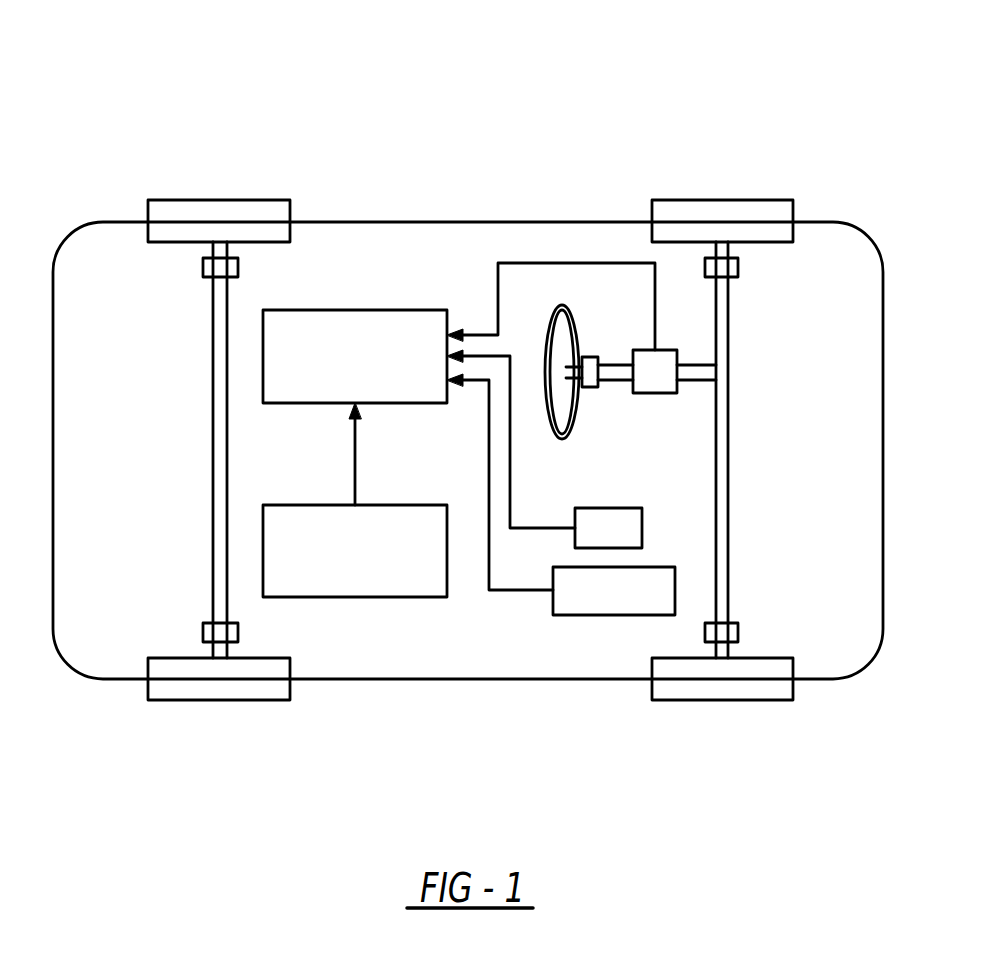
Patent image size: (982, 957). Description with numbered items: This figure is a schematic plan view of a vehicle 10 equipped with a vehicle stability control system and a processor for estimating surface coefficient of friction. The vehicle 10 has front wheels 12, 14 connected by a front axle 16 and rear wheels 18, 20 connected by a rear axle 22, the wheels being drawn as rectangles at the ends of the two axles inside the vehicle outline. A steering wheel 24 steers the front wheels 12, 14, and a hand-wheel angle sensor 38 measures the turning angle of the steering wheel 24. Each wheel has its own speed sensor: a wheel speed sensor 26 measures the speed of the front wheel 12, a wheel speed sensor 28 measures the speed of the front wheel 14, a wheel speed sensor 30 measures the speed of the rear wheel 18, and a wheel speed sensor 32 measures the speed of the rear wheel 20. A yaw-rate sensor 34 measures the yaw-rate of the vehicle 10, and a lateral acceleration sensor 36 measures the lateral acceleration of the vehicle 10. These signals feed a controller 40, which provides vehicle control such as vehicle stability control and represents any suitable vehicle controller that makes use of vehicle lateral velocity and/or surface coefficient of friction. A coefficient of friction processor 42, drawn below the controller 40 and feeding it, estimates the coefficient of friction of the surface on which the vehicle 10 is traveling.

The vehicle 10 is at (673, 120).
The front wheel 12 is at (762, 200).
The front wheel 14 is at (720, 700).
The front axle 16 is at (728, 557).
The rear wheel 18 is at (217, 200).
The rear wheel 20 is at (220, 700).
The rear axle 22 is at (213, 450).
The steering wheel 24 is at (562, 438).
The wheel speed sensor 26 is at (738, 267).
The wheel speed sensor 28 is at (738, 633).
The wheel speed sensor 30 is at (203, 270).
The wheel speed sensor 32 is at (203, 635).
The yaw-rate sensor 34 is at (642, 527).
The lateral acceleration sensor 36 is at (590, 615).
The hand-wheel angle sensor 38 is at (655, 393).
The controller 40 is at (370, 310).
The coefficient of friction processor 42 is at (368, 597).